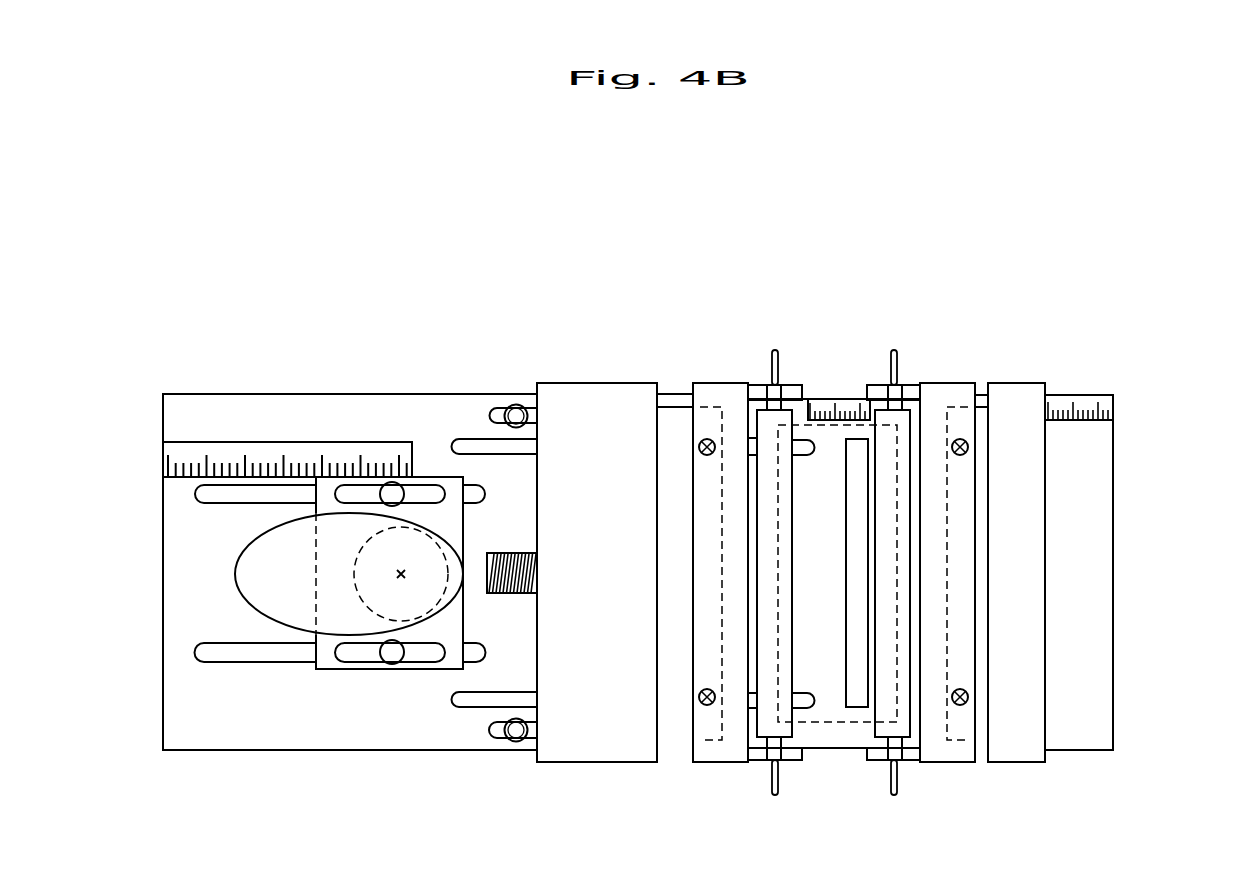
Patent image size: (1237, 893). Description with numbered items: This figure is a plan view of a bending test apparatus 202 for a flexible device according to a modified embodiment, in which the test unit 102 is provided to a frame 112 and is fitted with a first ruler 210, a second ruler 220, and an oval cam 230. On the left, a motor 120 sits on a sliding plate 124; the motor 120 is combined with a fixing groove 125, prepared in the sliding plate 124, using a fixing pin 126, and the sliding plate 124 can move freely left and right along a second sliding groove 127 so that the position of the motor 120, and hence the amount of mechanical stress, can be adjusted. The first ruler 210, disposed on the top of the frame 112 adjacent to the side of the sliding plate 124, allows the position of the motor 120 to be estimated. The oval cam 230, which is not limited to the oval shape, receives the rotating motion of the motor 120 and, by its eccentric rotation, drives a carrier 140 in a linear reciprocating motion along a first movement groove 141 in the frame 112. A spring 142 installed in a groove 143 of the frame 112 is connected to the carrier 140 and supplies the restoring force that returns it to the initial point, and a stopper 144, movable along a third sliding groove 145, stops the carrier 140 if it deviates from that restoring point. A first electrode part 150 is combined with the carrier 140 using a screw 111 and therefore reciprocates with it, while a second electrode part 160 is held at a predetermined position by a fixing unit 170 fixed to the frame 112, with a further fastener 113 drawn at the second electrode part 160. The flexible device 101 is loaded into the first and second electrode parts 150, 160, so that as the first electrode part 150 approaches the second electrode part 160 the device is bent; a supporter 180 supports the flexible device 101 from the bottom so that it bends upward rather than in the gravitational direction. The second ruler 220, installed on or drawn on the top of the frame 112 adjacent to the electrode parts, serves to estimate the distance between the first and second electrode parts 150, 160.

The bending test apparatus 202 is at (1062, 203).
The test unit 102 is at (626, 292).
The first ruler 210 is at (165, 445).
The sliding plate 124 is at (336, 491).
The fixing groove 125 is at (340, 656).
The fixing pin 126 is at (392, 660).
The second sliding groove 127 is at (223, 656).
The oval cam 230 is at (258, 548).
The motor 120 is at (375, 589).
The first movement groove 141 is at (470, 700).
The spring 142 is at (538, 572).
The groove 143 is at (538, 556).
The stopper 144 is at (516, 404).
The third sliding groove 145 is at (496, 411).
The carrier 140 is at (620, 758).
The first electrode part 150 is at (733, 735).
The screw 111 is at (707, 438).
The flexible device 101 is at (813, 720).
The supporter 180 is at (855, 700).
The second electrode part 160 is at (930, 735).
The fixing screw 113 is at (962, 438).
The fixing unit 170 is at (1020, 758).
The frame 112 is at (1100, 553).
The second ruler 220 is at (1086, 406).